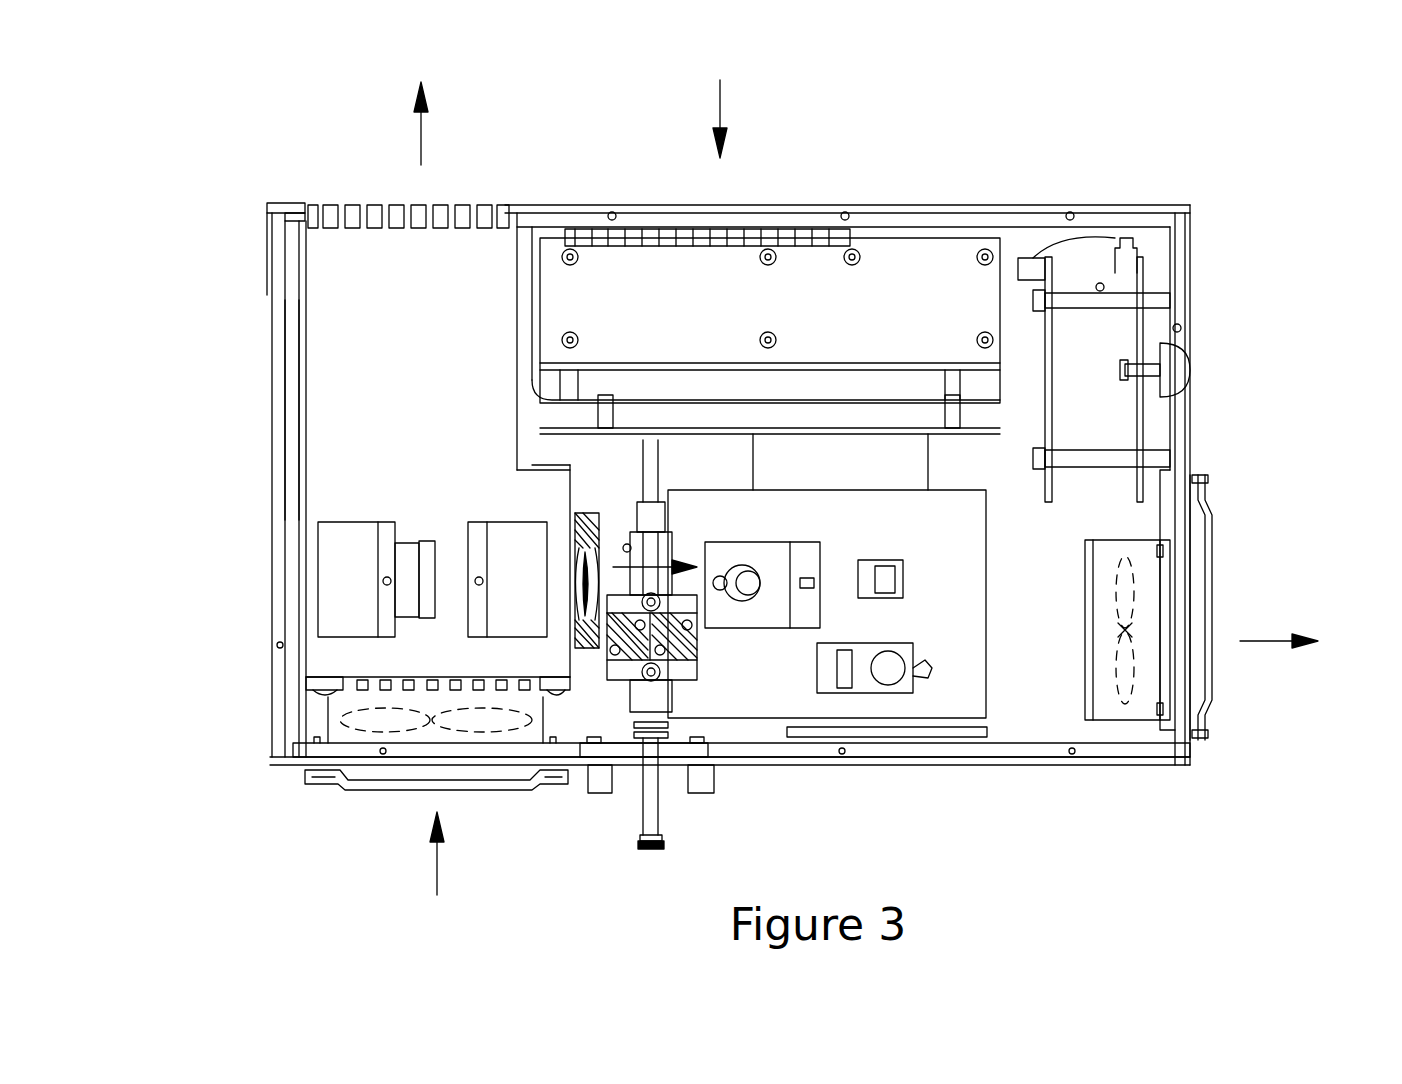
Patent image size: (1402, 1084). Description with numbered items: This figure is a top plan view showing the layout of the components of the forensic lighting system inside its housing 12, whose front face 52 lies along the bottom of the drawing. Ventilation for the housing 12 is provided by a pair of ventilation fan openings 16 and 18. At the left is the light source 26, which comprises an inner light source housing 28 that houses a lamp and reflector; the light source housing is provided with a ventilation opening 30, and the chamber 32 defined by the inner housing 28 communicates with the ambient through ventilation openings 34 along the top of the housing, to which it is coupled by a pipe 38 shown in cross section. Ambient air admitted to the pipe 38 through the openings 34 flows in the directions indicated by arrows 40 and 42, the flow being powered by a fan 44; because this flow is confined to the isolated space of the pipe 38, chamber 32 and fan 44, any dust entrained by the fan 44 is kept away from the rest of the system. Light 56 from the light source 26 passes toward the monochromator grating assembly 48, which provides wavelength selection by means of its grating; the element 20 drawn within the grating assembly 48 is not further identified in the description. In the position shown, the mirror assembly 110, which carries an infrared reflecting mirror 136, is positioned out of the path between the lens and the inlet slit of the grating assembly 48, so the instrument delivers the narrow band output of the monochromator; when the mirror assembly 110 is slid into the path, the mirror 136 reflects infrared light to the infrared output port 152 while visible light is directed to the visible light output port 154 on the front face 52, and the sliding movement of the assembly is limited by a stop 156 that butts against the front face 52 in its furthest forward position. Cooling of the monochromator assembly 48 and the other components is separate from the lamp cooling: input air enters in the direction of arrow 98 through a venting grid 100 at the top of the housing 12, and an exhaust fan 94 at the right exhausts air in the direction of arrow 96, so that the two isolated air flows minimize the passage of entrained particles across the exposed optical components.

The housing 12 is at (1075, 190).
The ventilation fan opening 16 is at (358, 788).
The ventilation fan opening 18 is at (1197, 603).
The lens 20 is at (740, 601).
The light source 26 is at (342, 663).
The inner light source housing 28 is at (427, 550).
The ventilation opening 30 is at (402, 465).
The chamber 32 is at (525, 516).
The ventilation openings 34 is at (365, 205).
The pipe 38 is at (318, 325).
The arrow 40 is at (421, 142).
The arrow 42 is at (435, 870).
The fan 44 is at (300, 712).
The monochromator grating assembly 48 is at (790, 528).
The front face 52 is at (833, 768).
The light 56 is at (668, 562).
The exhaust fan 94 is at (1130, 635).
The arrow 96 is at (1250, 641).
The arrow 98 is at (720, 110).
The venting grid 100 is at (748, 205).
The mirror assembly 110 is at (700, 647).
The infrared reflecting mirror 136 is at (627, 660).
The infrared output port 152 is at (600, 793).
The visible light output port 154 is at (690, 793).
The stop 156 is at (700, 727).